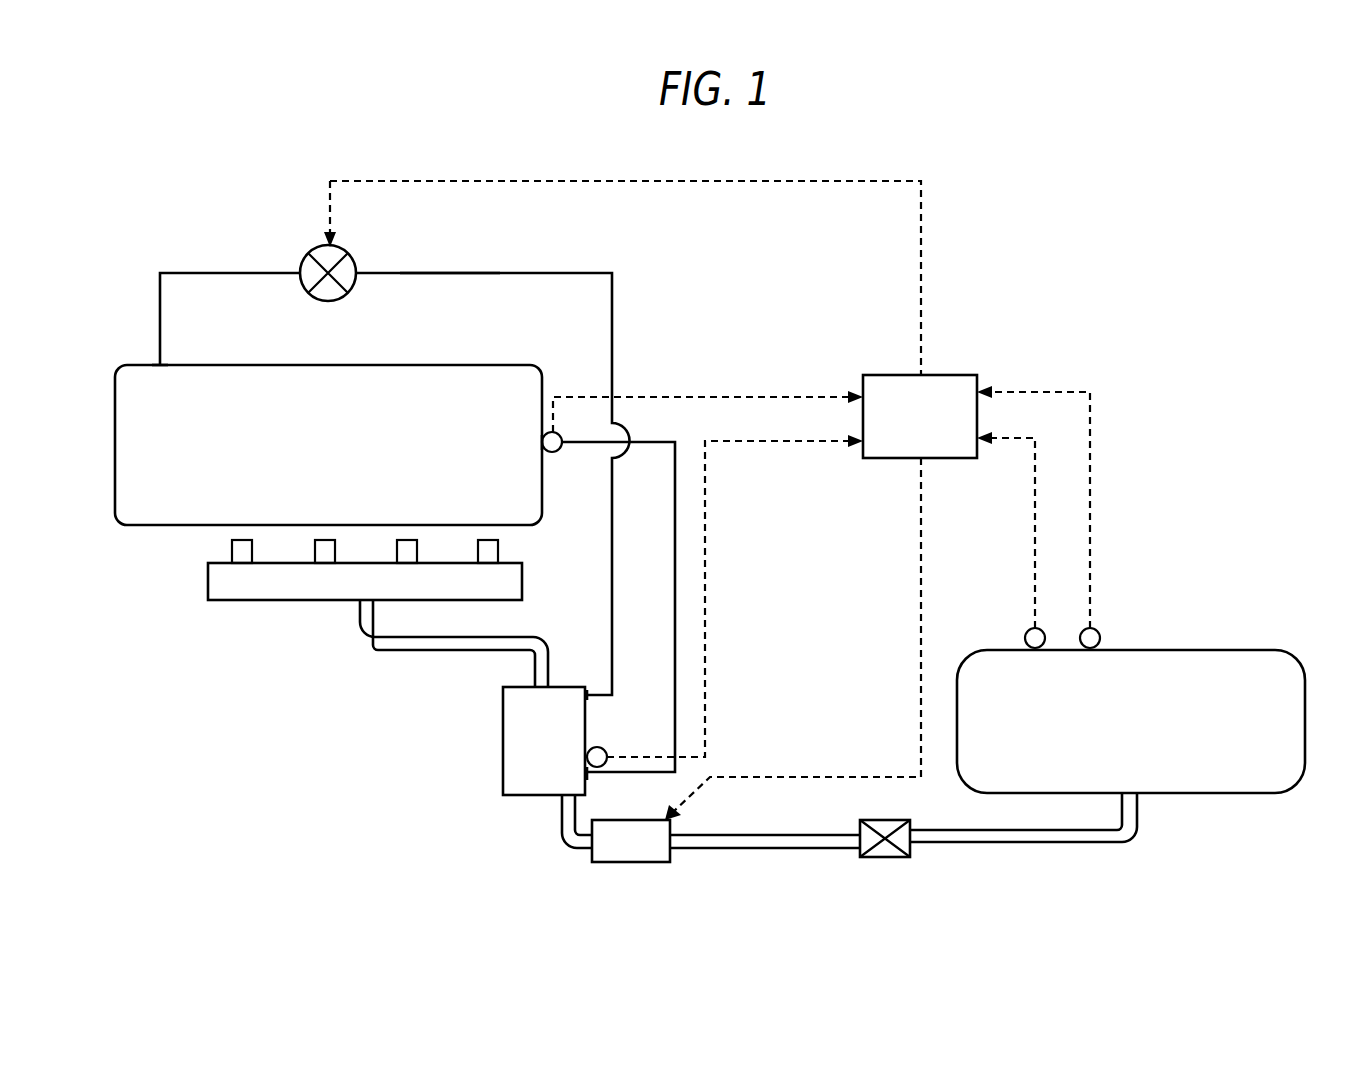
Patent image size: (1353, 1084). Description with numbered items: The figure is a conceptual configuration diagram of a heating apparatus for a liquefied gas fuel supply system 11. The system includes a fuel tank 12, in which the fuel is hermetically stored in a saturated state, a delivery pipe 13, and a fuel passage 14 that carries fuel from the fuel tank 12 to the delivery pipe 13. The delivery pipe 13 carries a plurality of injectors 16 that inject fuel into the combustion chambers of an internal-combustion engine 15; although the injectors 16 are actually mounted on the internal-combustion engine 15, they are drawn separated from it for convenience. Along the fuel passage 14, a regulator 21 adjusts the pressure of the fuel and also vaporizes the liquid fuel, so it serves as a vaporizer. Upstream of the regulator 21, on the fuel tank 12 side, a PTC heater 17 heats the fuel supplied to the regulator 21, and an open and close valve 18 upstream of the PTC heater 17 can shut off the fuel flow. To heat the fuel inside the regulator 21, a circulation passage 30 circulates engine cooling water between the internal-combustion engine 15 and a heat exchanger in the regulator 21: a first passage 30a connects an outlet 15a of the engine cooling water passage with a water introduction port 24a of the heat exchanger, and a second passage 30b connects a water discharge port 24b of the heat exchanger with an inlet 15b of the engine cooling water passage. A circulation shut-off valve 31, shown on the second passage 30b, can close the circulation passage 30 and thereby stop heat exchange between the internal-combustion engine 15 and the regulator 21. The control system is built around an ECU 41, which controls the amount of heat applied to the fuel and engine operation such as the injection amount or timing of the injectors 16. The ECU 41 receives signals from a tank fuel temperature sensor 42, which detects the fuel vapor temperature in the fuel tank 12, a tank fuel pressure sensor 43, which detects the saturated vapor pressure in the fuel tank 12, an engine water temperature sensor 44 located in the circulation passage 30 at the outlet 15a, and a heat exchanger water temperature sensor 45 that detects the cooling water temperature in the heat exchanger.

The liquefied gas fuel supply system 11 is at (456, 830).
The fuel tank 12 is at (1207, 650).
The delivery pipe 13 is at (276, 603).
The fuel passage 14 is at (755, 851).
The internal-combustion engine 15 is at (168, 527).
The outlet 15a is at (547, 455).
The inlet 15b is at (160, 362).
The injectors 16 is at (322, 538).
The PTC heater 17 is at (626, 866).
The open and close valve 18 is at (885, 860).
The regulator 21 is at (503, 740).
The water introduction port 24a is at (590, 776).
The water discharge port 24b is at (590, 683).
The circulation passage 30 is at (442, 375).
The first passage 30a is at (674, 572).
The second passage 30b is at (190, 272).
The circulation shut-off valve 31 is at (350, 256).
The ECU 41 is at (948, 375).
The tank fuel temperature sensor 42 is at (1026, 628).
The tank fuel pressure sensor 43 is at (1099, 628).
The engine water temperature sensor 44 is at (545, 434).
The heat exchanger water temperature sensor 45 is at (602, 749).